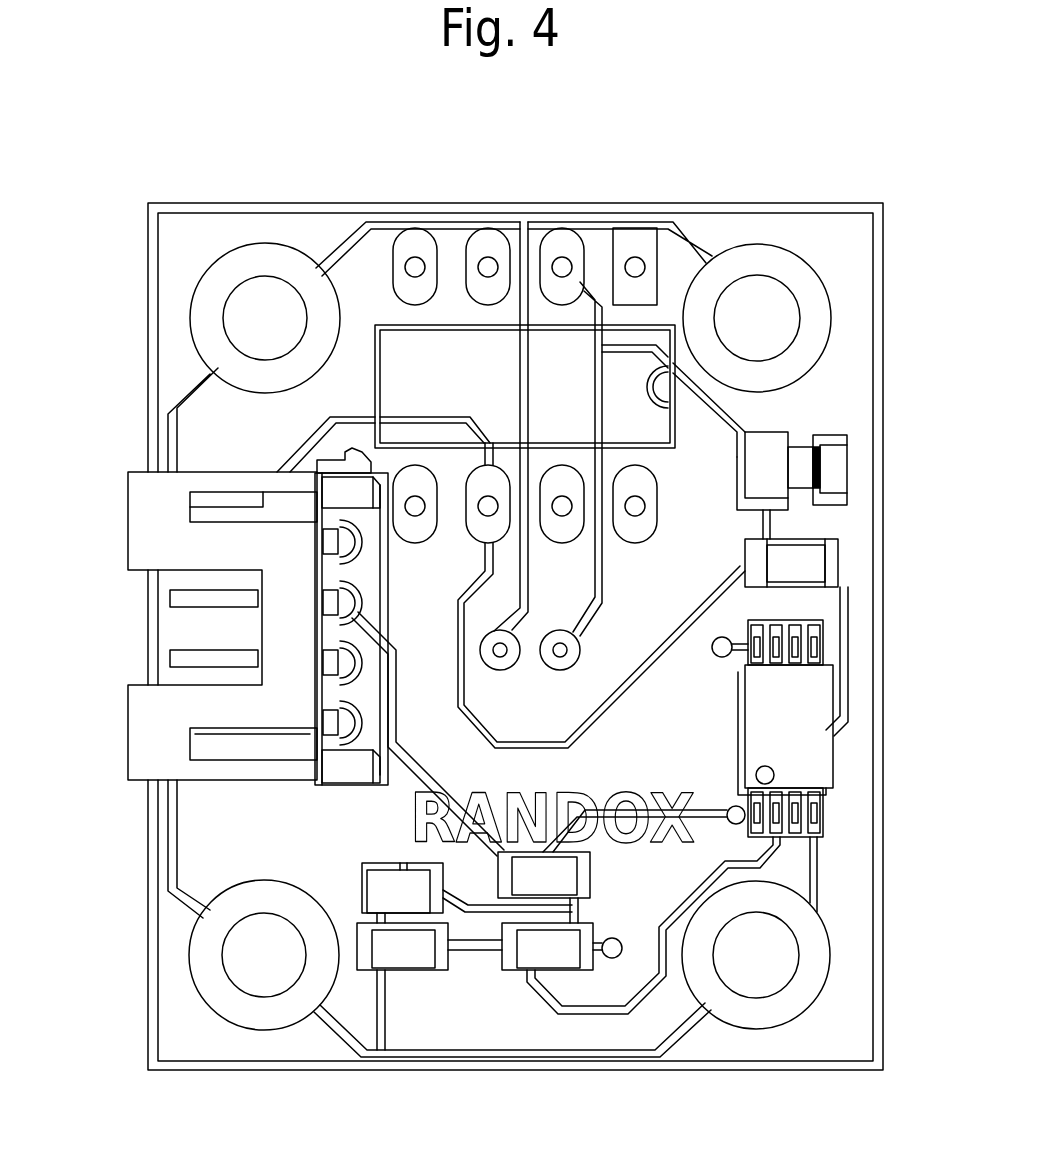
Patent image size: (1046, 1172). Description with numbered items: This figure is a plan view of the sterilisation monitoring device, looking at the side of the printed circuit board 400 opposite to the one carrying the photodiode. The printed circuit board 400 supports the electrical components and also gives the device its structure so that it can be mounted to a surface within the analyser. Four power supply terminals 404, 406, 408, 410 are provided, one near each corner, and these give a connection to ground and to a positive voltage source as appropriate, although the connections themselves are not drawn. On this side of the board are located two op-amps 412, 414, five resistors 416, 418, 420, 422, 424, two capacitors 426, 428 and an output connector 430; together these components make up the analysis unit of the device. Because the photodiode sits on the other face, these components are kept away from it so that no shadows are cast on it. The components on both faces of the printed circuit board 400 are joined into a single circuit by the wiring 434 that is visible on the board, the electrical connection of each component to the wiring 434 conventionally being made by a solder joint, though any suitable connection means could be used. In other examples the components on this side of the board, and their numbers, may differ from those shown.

The printed circuit board 400 is at (768, 218).
The power supply terminal 404 is at (815, 290).
The power supply terminal 406 is at (205, 298).
The power supply terminal 408 is at (222, 992).
The power supply terminal 410 is at (813, 963).
The op-amp 412 is at (455, 325).
The op-amp 414 is at (812, 757).
The resistor 416 is at (835, 478).
The resistor 418 is at (805, 563).
The resistor 420 is at (560, 960).
The resistor 422 is at (408, 953).
The resistor 424 is at (528, 887).
The capacitor 426 is at (765, 445).
The capacitor 428 is at (378, 880).
The output connector 430 is at (163, 715).
The wiring 434 is at (687, 1027).